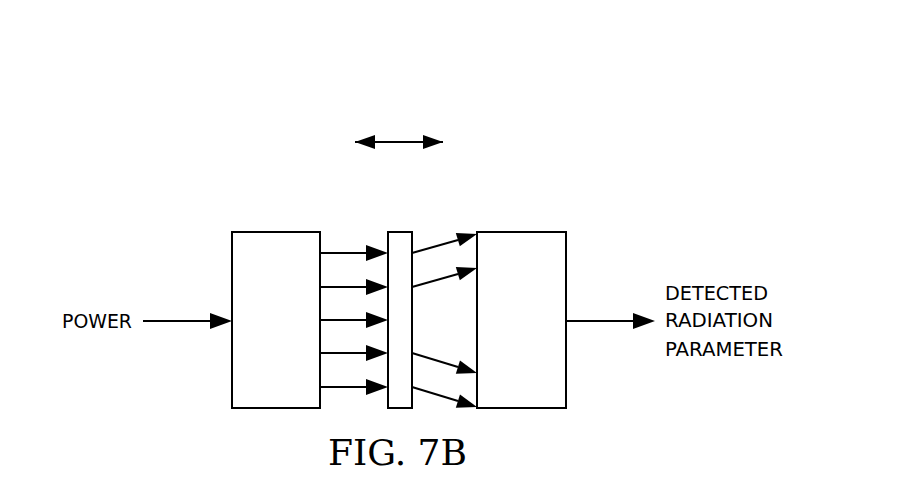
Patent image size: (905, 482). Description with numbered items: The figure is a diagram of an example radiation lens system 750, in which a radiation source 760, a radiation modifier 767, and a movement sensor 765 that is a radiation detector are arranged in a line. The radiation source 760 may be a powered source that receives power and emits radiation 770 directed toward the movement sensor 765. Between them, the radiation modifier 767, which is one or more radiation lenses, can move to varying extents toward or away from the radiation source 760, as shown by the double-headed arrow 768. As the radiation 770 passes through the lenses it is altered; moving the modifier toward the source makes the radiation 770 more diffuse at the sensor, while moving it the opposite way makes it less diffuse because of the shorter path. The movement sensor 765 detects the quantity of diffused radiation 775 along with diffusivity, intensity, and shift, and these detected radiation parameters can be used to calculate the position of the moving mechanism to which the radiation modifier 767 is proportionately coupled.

The radiation lens system 750 is at (456, 204).
The radiation source 760 is at (278, 231).
The movement sensor 765 is at (520, 231).
The radiation modifier 767 is at (398, 231).
The double-headed arrow 768 is at (400, 138).
The radiation 770 is at (332, 212).
The diffused radiation 775 is at (466, 312).